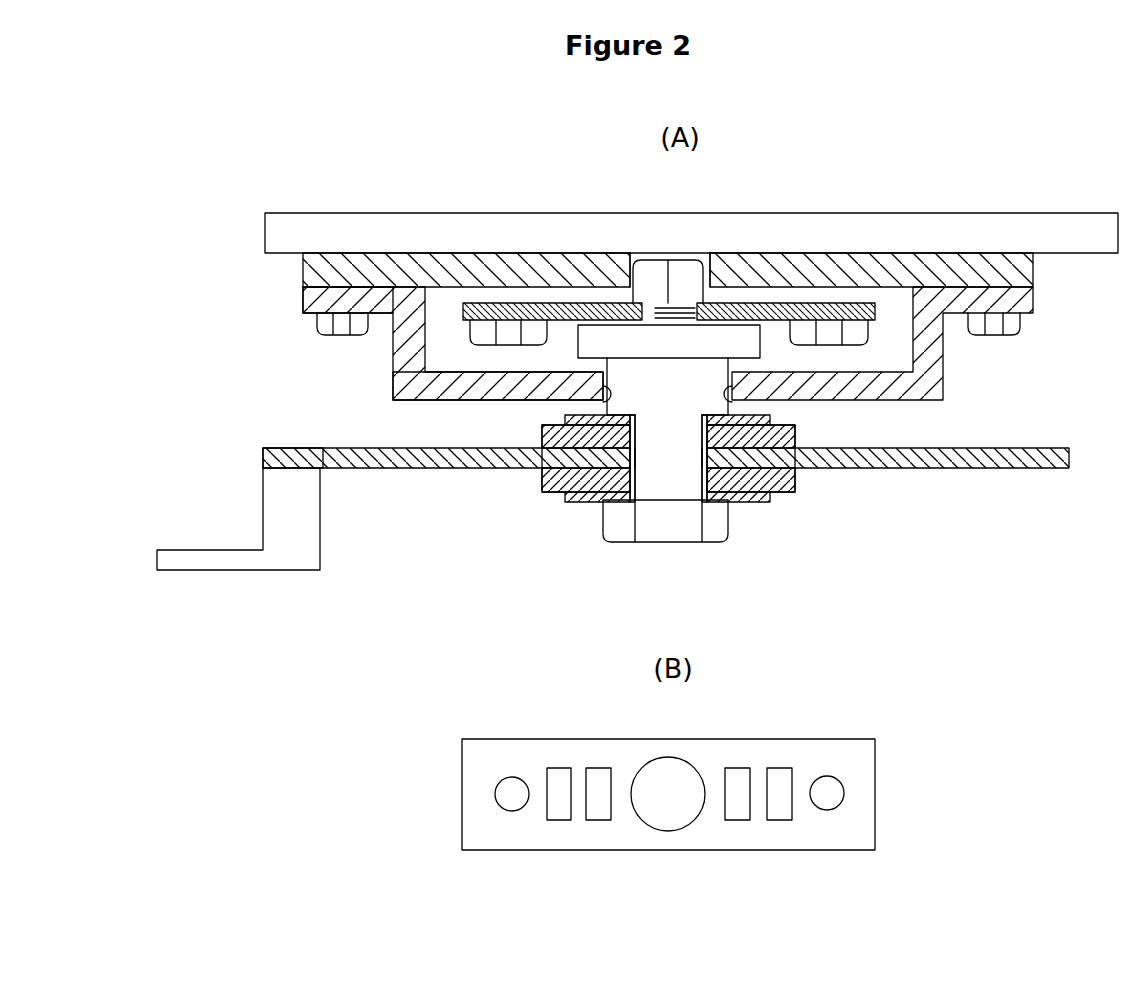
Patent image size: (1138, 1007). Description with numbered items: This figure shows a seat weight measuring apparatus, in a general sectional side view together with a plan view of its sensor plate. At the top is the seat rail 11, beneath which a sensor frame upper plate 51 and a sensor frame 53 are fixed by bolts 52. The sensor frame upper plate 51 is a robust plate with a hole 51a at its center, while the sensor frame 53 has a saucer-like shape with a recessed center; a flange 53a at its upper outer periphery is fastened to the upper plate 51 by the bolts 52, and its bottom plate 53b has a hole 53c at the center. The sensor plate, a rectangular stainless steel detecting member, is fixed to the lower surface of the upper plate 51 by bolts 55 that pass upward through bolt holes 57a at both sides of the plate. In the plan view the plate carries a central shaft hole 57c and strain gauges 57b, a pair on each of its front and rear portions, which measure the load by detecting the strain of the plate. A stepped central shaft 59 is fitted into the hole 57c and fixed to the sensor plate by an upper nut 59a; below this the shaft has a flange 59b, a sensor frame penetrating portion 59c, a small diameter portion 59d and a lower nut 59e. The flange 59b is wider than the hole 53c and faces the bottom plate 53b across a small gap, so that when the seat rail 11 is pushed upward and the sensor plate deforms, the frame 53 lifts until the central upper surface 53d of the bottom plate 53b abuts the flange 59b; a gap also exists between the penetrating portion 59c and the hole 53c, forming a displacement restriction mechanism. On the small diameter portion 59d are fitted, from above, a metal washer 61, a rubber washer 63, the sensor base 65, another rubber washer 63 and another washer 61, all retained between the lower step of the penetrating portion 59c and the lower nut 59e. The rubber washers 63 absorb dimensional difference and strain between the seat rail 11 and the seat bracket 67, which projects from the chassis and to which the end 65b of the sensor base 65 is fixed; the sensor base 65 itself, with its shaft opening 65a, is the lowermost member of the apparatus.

The seat rail 11 is at (328, 230).
The sensor frame upper plate 51 is at (322, 272).
The hole 51a is at (660, 262).
The bolts 52 is at (342, 327).
The sensor frame 53 is at (410, 350).
The flange 53a is at (313, 300).
The bottom plate 53b is at (412, 392).
The hole 53c is at (603, 394).
The central upper surface 53d is at (743, 363).
The bolts 55 is at (498, 337).
The bolt holes 57a is at (515, 785).
The strain gauges 57b is at (597, 775).
The central shaft hole 57c is at (672, 780).
The central shaft 59 is at (653, 383).
The upper nut 59a is at (688, 268).
The flange 59b is at (737, 337).
The sensor frame penetrating portion 59c is at (705, 387).
The small diameter portion 59d is at (670, 467).
The lower nut 59e is at (620, 520).
The washer 61 is at (795, 423).
The rubber washer 63 is at (773, 477).
The sensor base 65 is at (845, 469).
The hole of support plate 65a is at (700, 462).
The end 65b is at (283, 447).
The seat bracket 67 is at (277, 505).